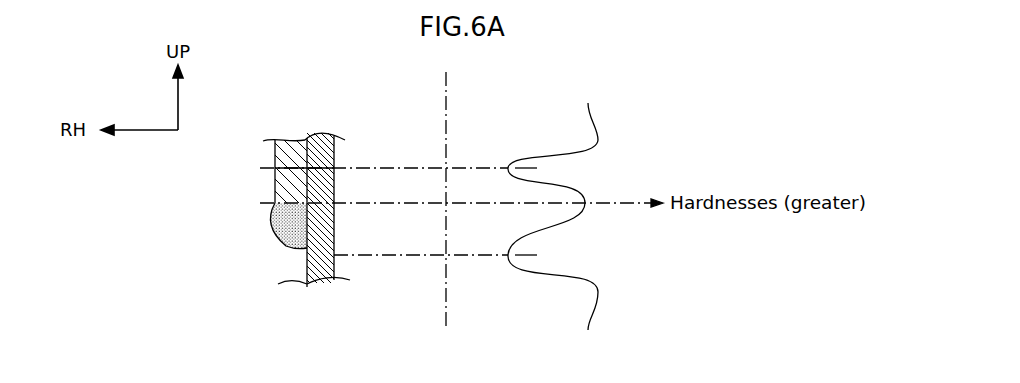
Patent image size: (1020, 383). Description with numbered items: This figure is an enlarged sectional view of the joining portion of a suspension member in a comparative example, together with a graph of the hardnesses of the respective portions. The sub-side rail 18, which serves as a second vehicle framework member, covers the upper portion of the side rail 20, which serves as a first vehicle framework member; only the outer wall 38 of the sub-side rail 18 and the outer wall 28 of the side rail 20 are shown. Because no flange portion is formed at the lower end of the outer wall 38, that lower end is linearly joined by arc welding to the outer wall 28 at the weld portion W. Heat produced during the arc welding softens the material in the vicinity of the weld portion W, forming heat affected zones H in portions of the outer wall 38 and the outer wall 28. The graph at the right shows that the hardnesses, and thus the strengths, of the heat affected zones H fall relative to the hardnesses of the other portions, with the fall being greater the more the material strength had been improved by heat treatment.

The sub-side rail 18 is at (268, 183).
The side rail 20 is at (342, 153).
The outer wall 28 is at (318, 135).
The outer wall 38 is at (297, 140).
The weld portion W is at (278, 238).
The heat affected zone H is at (267, 168).